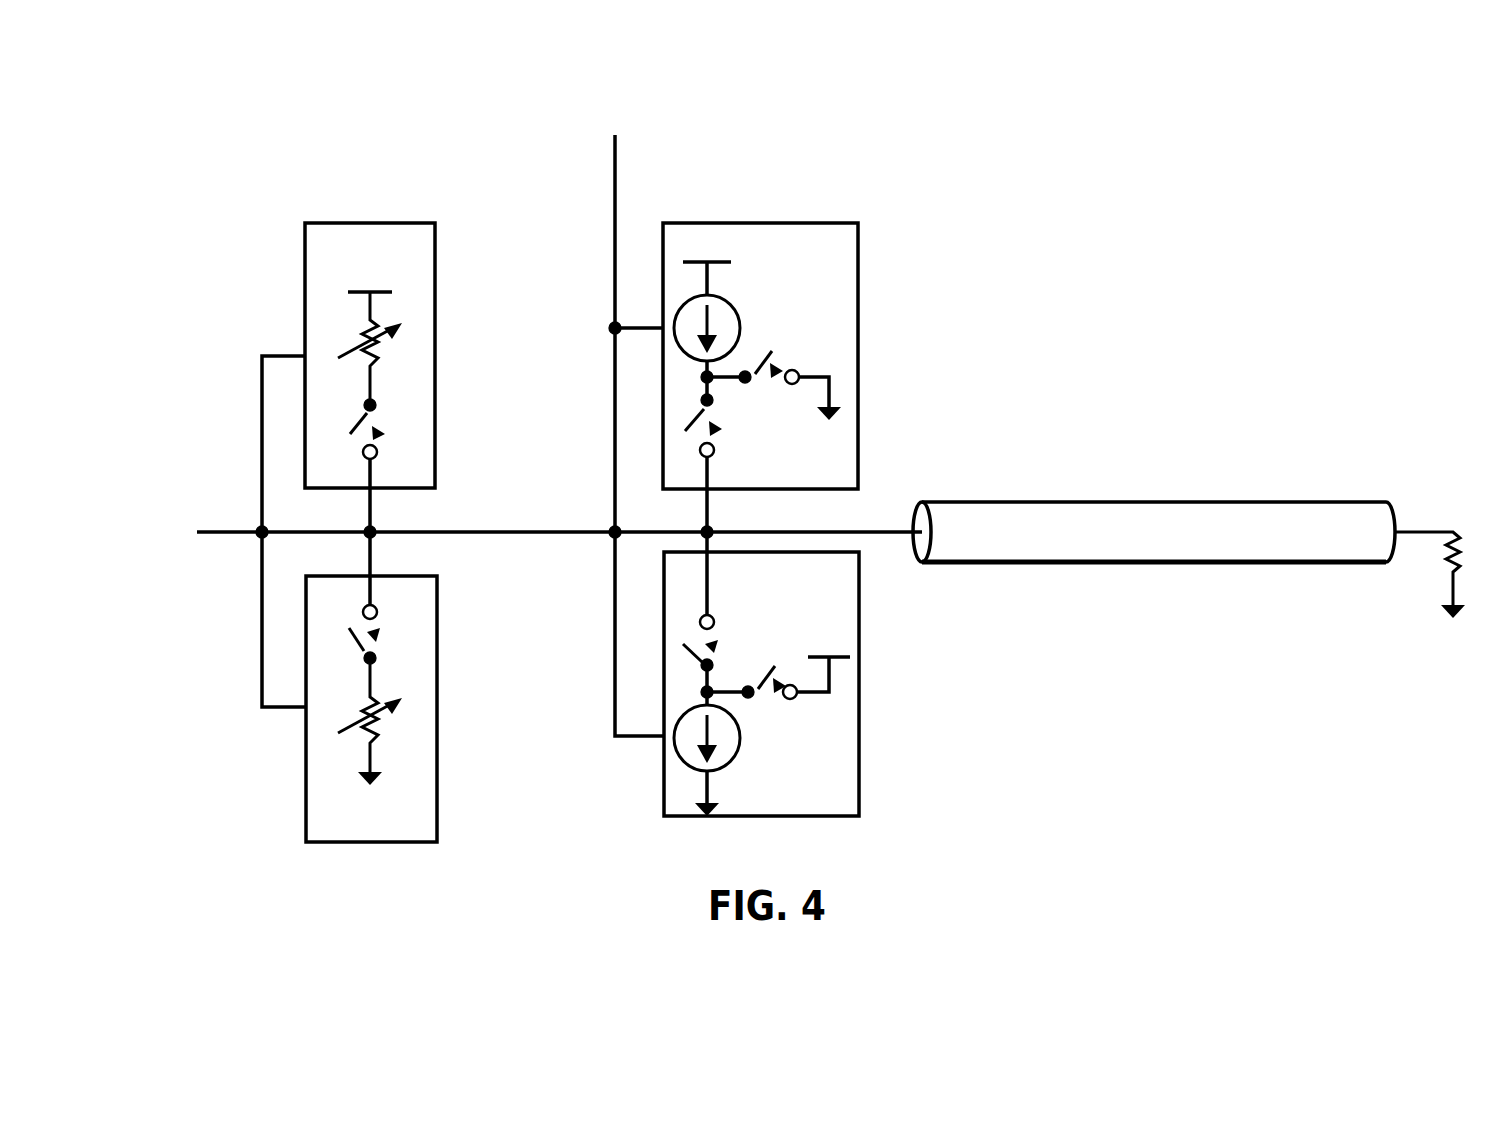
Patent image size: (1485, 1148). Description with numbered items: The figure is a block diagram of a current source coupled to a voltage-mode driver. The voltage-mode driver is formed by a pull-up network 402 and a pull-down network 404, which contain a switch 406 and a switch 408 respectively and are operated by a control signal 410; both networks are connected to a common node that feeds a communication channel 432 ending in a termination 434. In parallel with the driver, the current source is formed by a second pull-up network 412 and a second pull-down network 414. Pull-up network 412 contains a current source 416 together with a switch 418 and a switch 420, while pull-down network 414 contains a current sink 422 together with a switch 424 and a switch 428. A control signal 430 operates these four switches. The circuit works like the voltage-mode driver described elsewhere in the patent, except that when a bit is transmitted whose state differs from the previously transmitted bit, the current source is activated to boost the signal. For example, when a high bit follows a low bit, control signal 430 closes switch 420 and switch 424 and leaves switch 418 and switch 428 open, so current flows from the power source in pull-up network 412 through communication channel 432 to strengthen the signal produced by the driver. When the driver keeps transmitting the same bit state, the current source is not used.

The pull-up network 402 is at (370, 377).
The pull-down network 404 is at (371, 687).
The switch 406 is at (393, 433).
The switch 408 is at (393, 650).
The control signal 410 is at (508, 531).
The pull-up network 412 is at (760, 377).
The pull-down network 414 is at (761, 674).
The current source 416 is at (690, 300).
The switch 418 is at (772, 340).
The switch 420 is at (690, 412).
The current sink 422 is at (742, 752).
The switch 424 is at (772, 662).
The switch 428 is at (690, 658).
The control signal 430 is at (615, 406).
The communication channel 432 is at (1154, 532).
The termination 434 is at (1448, 562).